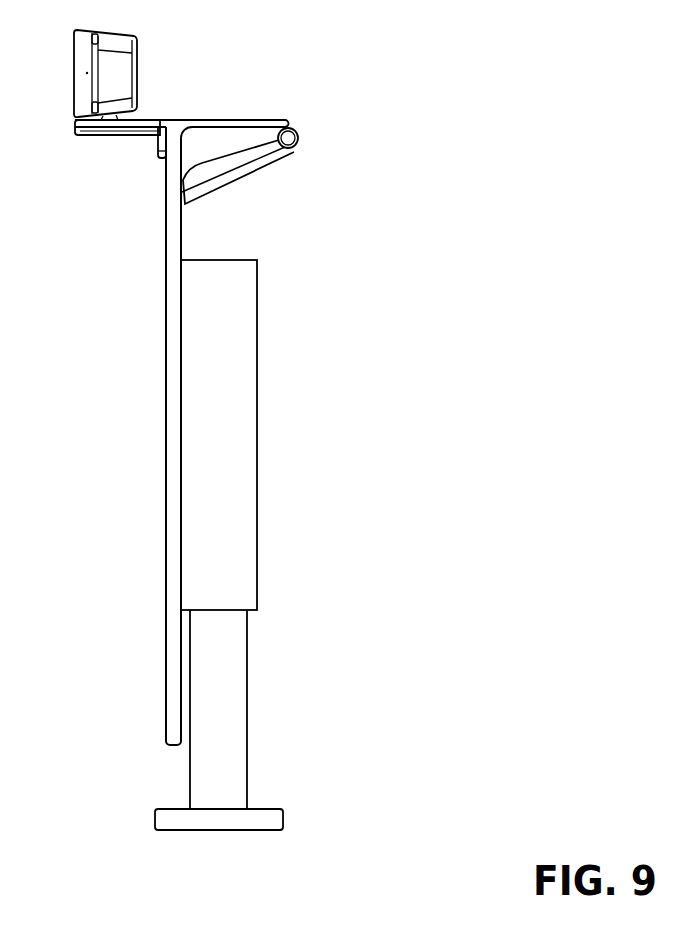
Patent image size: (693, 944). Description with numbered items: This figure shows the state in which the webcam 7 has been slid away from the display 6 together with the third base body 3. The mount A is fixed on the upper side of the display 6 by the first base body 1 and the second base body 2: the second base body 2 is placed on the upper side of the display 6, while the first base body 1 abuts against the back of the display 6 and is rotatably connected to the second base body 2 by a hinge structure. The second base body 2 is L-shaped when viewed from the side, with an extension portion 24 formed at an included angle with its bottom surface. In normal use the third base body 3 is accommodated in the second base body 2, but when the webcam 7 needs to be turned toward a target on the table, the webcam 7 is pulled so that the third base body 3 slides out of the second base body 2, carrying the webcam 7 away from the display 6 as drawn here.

The first base body 1 is at (223, 174).
The second base body 2 is at (226, 120).
The third base body 3 is at (97, 135).
The display 6 is at (150, 452).
The webcam 7 is at (150, 56).
The extension portion 24 is at (158, 158).
The mount A is at (287, 110).